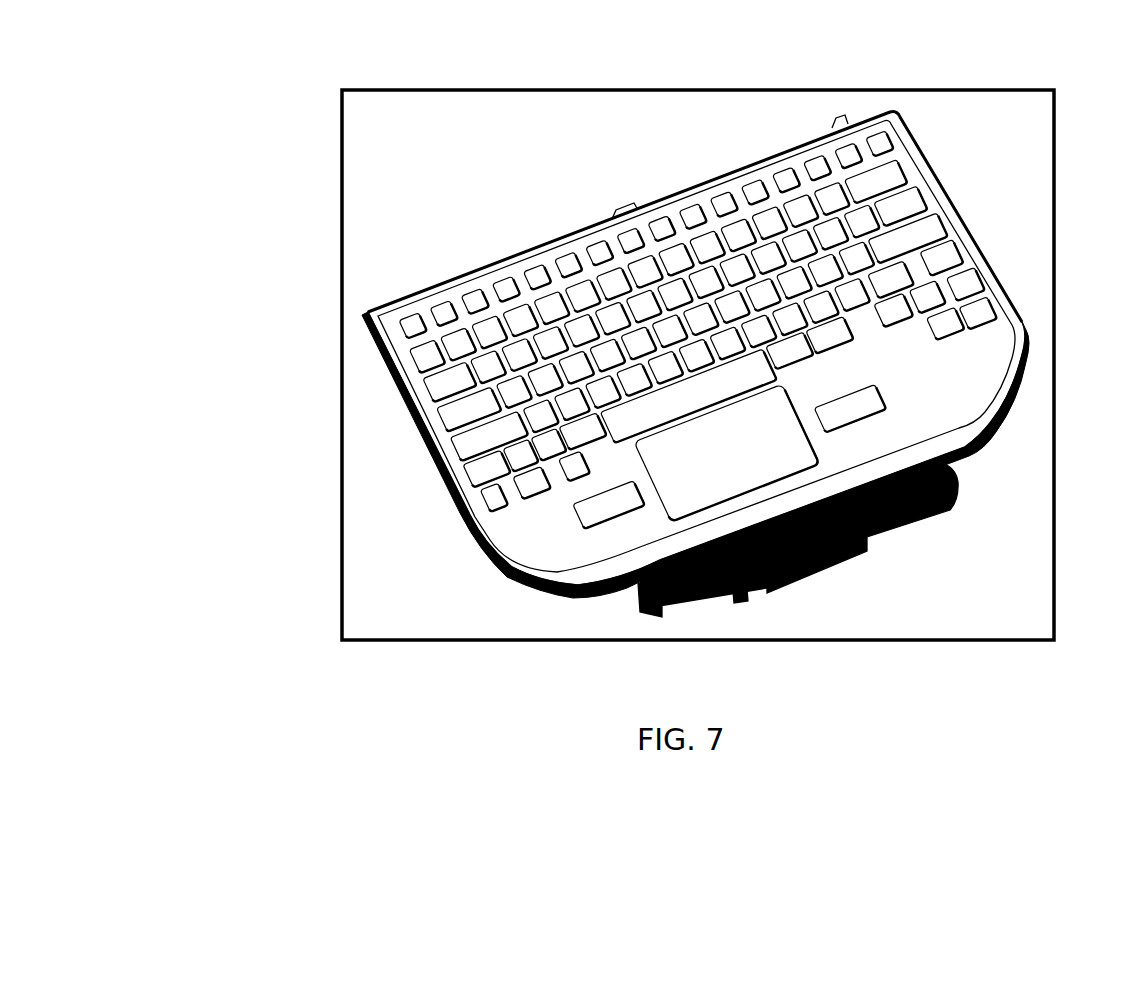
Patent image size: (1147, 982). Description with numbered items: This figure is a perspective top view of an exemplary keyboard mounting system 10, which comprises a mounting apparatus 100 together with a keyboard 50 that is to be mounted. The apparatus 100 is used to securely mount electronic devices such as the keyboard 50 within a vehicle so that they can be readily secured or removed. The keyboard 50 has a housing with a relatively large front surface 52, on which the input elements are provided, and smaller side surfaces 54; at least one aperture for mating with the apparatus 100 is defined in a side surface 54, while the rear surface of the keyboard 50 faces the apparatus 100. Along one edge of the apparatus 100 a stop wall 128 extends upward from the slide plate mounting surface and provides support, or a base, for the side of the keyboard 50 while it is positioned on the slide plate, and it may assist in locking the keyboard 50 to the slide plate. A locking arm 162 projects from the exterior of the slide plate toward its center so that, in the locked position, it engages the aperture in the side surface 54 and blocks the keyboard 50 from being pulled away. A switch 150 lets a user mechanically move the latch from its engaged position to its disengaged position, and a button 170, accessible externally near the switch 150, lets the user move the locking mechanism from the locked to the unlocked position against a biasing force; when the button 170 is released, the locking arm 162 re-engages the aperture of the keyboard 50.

The keyboard mounting system 10 is at (259, 202).
The keyboard 50 is at (880, 112).
The front surface 52 is at (980, 366).
The side surface 54 is at (527, 586).
The apparatus 100 is at (926, 512).
The stop wall 128 is at (682, 603).
The switch 150 is at (745, 600).
The locking arm 162 is at (627, 207).
The button 170 is at (822, 578).